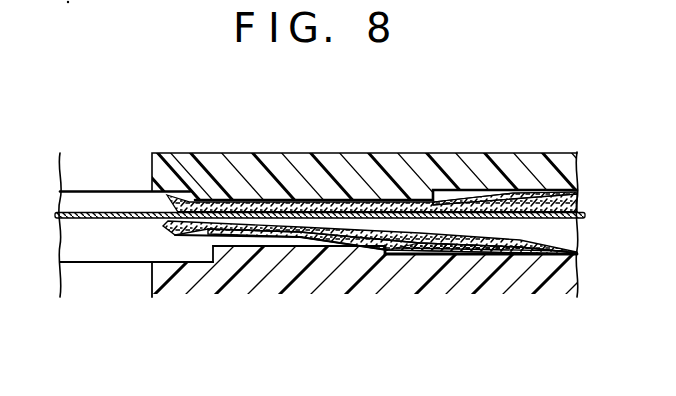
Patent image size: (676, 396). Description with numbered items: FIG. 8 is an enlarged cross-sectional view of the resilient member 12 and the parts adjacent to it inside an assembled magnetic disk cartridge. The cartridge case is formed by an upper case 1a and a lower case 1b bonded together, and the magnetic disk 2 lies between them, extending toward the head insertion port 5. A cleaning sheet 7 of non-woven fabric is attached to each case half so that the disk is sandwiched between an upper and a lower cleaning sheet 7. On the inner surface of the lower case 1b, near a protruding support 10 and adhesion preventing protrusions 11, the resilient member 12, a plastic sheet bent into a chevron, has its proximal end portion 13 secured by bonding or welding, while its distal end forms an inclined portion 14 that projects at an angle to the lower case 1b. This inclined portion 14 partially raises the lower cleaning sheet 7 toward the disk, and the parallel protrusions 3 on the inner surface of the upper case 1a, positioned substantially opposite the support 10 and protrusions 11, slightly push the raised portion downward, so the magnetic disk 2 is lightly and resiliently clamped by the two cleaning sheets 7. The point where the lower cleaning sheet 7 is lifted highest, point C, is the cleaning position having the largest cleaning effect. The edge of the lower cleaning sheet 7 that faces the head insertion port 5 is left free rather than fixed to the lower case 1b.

The upper case 1a is at (382, 170).
The lower case 1b is at (450, 280).
The magnetic disk 2 is at (527, 190).
The protrusions 3 is at (303, 197).
The head insertion port 5 is at (101, 178).
The cleaning sheet 7 is at (545, 195).
The protruding support 10 is at (408, 257).
The adhesion preventing protrusions 11 is at (230, 252).
The resilient member 12 is at (347, 250).
The proximal end portion 13 is at (492, 270).
The inclined portion 14 is at (283, 240).
The cleaning position C is at (231, 216).